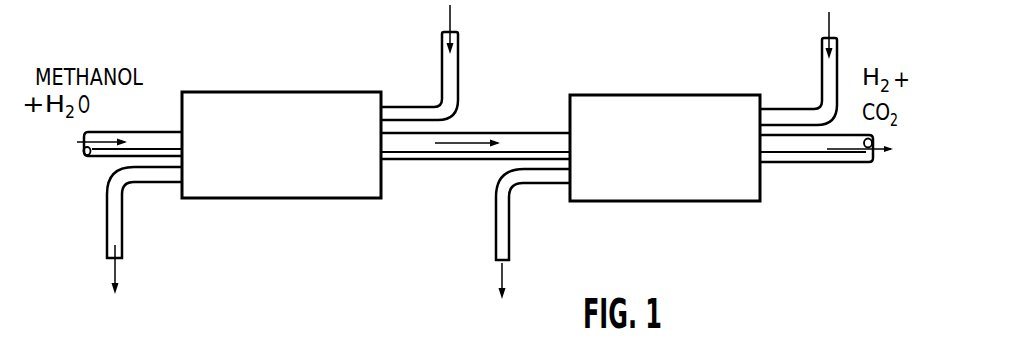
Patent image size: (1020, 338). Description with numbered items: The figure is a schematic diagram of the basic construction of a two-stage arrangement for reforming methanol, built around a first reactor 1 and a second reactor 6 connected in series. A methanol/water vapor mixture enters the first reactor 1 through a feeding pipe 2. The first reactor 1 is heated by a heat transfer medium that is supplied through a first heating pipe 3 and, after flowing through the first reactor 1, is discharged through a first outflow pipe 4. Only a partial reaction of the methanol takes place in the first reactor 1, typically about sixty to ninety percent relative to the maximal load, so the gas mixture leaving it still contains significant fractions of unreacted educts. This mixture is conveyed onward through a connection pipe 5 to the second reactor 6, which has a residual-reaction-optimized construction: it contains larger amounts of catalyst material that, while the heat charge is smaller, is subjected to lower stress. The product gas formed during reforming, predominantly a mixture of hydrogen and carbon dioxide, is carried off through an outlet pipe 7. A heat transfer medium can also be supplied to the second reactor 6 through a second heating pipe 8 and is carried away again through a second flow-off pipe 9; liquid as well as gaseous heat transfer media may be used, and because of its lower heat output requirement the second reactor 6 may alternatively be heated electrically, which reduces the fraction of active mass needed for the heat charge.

The first reactor 1 is at (263, 161).
The feeding pipe 2 is at (103, 152).
The first heating pipe 3 is at (452, 72).
The first outflow pipe 4 is at (122, 220).
The connection pipe 5 is at (410, 148).
The second reactor 6 is at (647, 166).
The outlet pipe 7 is at (790, 150).
The second heating pipe 8 is at (828, 82).
The second flow-off pipe 9 is at (512, 238).